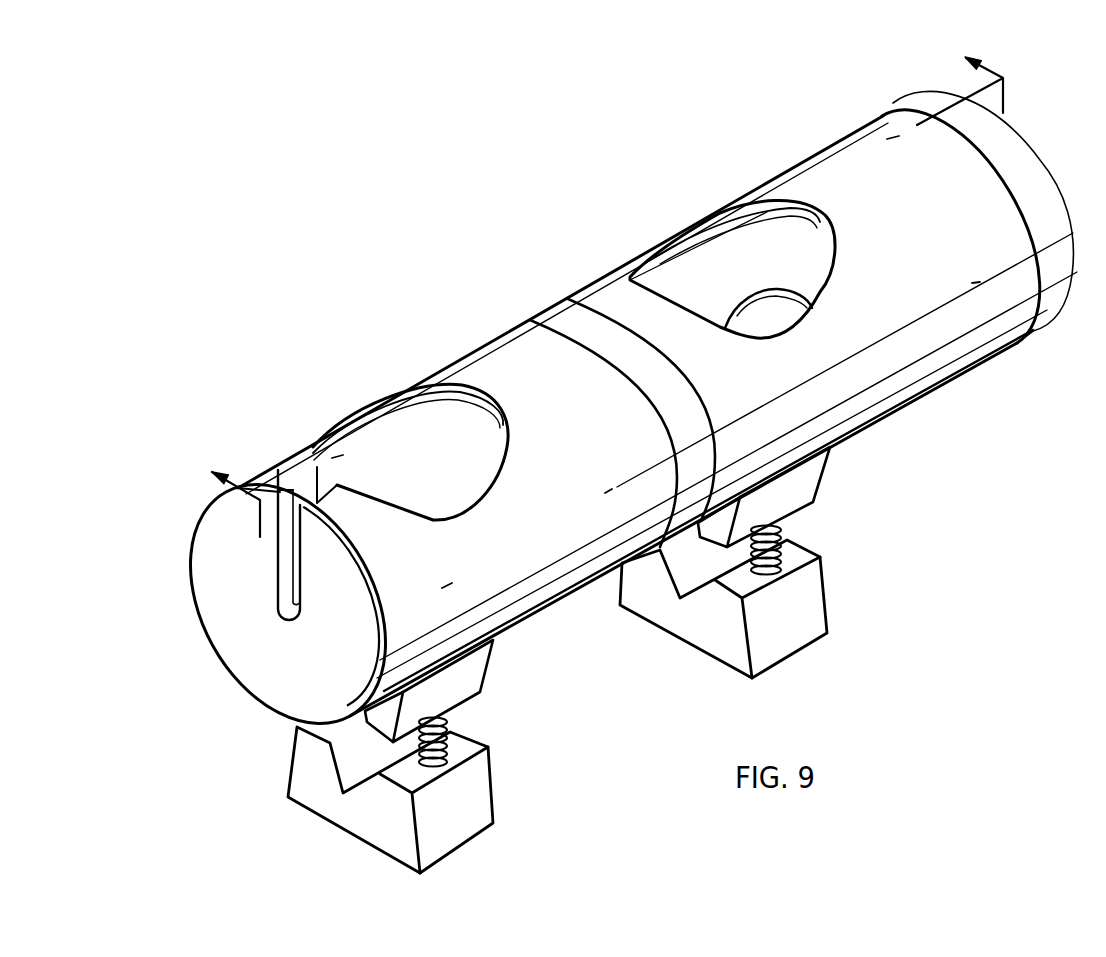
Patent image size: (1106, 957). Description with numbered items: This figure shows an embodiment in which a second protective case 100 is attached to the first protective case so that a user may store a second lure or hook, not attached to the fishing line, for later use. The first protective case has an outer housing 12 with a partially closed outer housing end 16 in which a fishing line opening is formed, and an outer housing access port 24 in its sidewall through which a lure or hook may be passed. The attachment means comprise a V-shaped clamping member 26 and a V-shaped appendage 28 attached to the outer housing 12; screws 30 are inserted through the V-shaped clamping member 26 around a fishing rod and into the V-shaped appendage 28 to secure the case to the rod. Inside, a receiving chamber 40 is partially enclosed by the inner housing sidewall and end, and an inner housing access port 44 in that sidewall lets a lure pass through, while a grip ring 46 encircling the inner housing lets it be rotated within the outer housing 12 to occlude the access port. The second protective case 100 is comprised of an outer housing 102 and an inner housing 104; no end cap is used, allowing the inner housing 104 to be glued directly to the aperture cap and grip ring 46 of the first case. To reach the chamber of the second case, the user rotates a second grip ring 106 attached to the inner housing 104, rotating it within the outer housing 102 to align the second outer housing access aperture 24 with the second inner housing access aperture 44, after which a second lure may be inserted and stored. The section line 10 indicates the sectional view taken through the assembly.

The second protective case 100 is at (781, 152).
The outer housing 12 is at (262, 705).
The outer housing end 16 is at (283, 570).
The outer housing access port 24 is at (733, 207).
The V-shaped clamping member 26 is at (468, 790).
The V-shaped appendage 28 is at (483, 663).
The screws 30 is at (458, 717).
The receiving chamber 40 is at (433, 428).
The inner housing access port 44 is at (777, 294).
The grip ring 46 is at (568, 306).
The outer housing 102 is at (873, 132).
The inner housing 104 is at (713, 262).
The second grip ring 106 is at (1046, 326).
The section line 10- 10 is at (622, 297).